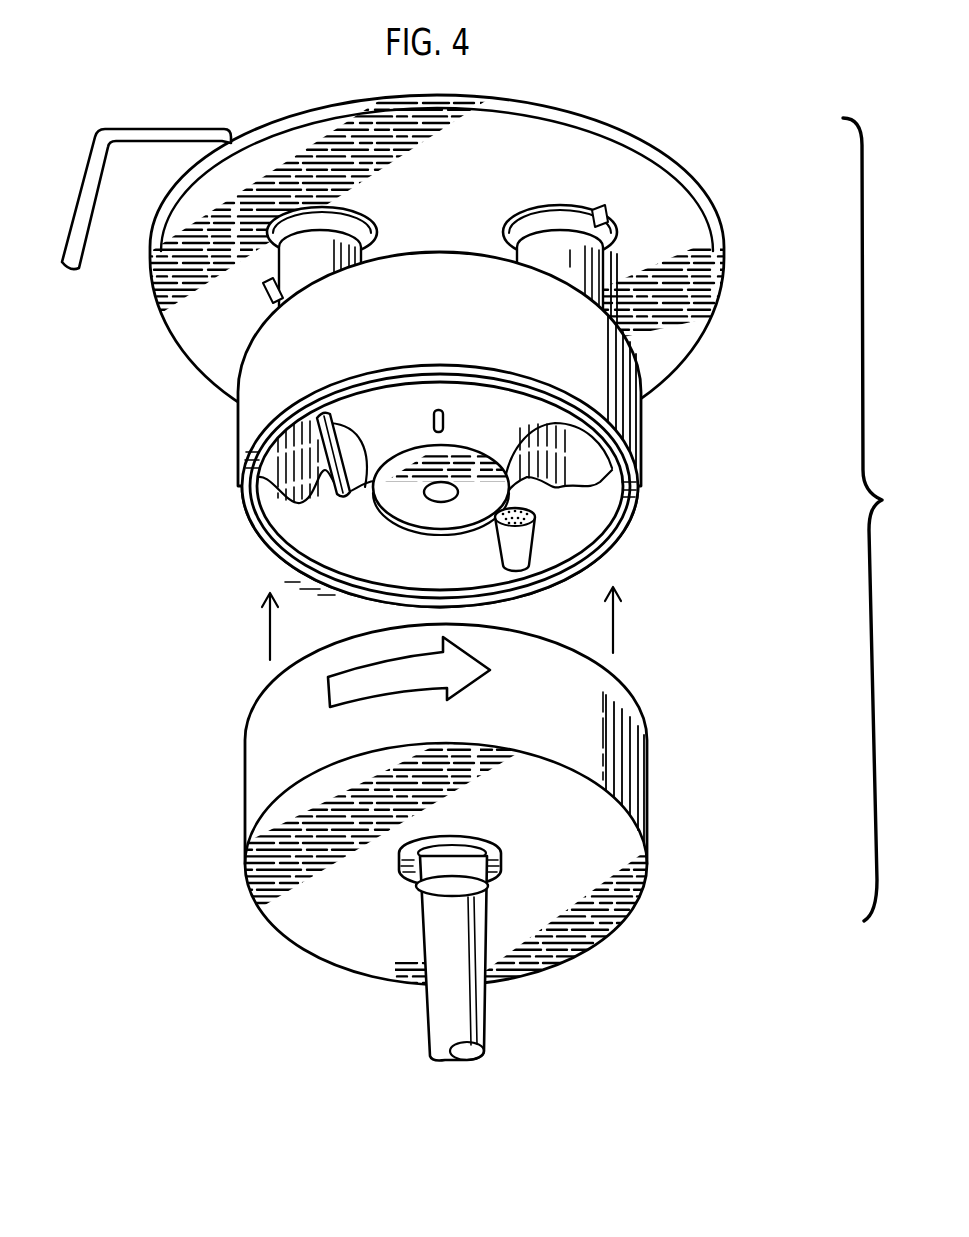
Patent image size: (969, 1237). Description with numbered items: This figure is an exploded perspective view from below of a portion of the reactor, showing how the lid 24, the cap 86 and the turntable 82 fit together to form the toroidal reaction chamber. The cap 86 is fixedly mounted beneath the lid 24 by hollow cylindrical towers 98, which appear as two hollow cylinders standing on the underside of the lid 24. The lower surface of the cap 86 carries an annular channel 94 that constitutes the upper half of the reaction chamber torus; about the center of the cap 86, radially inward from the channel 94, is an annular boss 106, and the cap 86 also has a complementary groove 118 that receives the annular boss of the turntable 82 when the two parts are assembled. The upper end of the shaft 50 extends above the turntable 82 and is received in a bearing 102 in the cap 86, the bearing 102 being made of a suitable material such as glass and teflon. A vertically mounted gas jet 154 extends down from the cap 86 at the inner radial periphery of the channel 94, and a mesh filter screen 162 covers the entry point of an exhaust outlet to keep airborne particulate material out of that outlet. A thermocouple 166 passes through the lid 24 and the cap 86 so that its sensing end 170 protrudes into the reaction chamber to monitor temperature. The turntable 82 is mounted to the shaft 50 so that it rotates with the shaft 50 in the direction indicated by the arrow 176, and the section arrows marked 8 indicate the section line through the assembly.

The lid 24 is at (308, 118).
The thermocouple 166 is at (160, 127).
The hollow cylindrical towers 98 is at (323, 263).
The cap 86 is at (640, 397).
The groove 118 is at (632, 484).
The annular channel 94 is at (370, 567).
The sensing end 170 is at (331, 490).
The gas jet 154 is at (448, 426).
The annular boss 106 is at (421, 440).
The bearing 102 is at (458, 492).
The mesh filter screen 162 is at (495, 540).
The section line 8- 8 is at (441, 623).
The turntable 82 is at (648, 771).
The arrow 176 is at (373, 663).
The shaft 50 is at (437, 933).